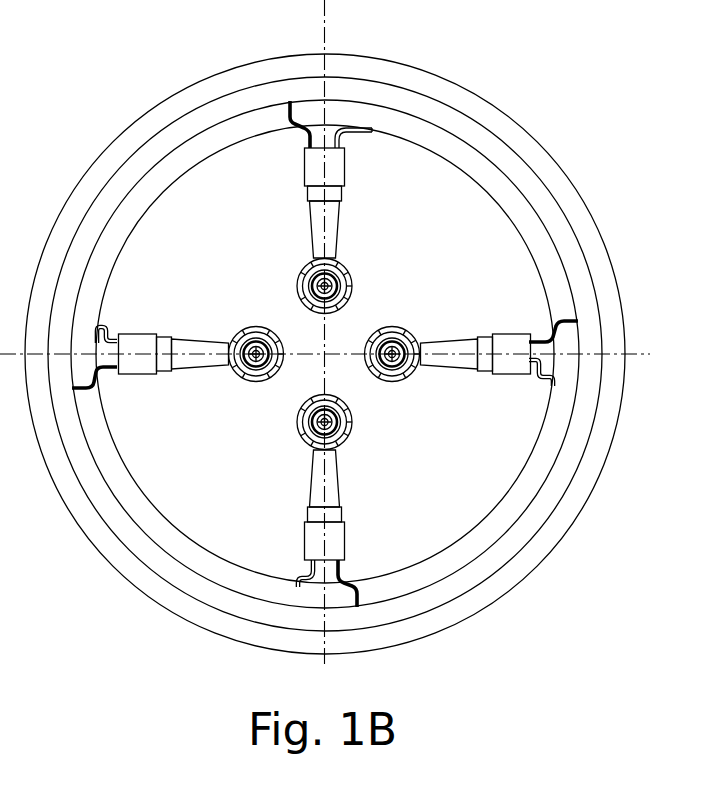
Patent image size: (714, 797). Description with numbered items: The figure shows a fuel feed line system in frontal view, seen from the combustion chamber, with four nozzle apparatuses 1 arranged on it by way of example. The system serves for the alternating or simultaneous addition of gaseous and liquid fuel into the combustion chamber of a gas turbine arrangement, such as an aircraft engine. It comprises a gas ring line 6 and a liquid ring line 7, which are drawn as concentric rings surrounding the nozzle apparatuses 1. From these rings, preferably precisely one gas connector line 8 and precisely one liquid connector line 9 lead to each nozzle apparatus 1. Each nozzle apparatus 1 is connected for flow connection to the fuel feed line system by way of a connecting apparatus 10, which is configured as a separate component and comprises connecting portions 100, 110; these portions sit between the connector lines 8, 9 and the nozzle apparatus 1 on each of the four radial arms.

The nozzle apparatus 1 is at (318, 220).
The gas ring line 6 is at (182, 102).
The liquid ring line 7 is at (147, 155).
The gas connector line 8 is at (357, 128).
The liquid connector line 9 is at (286, 112).
The connecting apparatus 10 is at (337, 231).
The connecting portion 100 is at (332, 163).
The connecting portion 110 is at (332, 193).